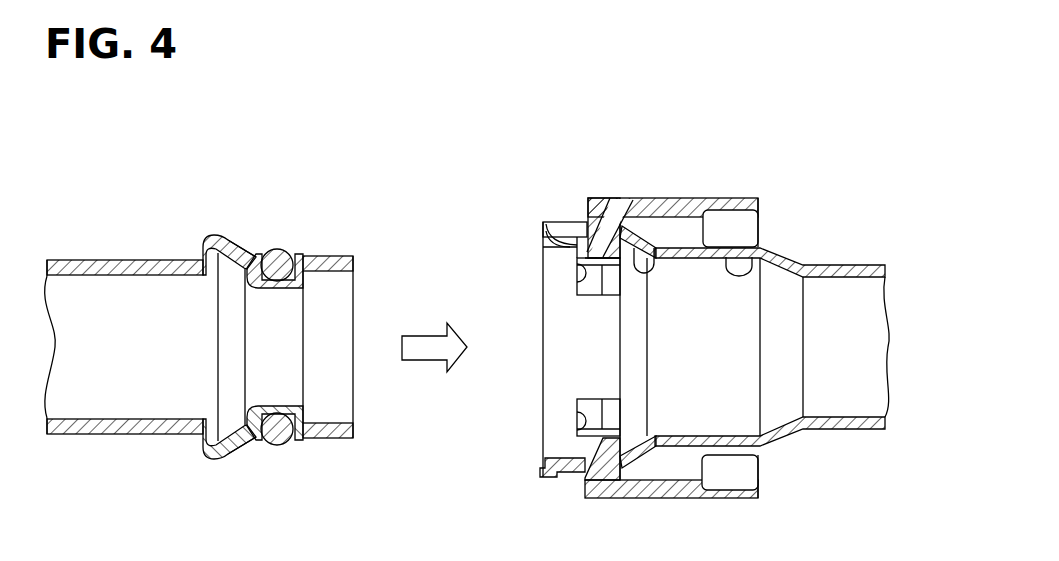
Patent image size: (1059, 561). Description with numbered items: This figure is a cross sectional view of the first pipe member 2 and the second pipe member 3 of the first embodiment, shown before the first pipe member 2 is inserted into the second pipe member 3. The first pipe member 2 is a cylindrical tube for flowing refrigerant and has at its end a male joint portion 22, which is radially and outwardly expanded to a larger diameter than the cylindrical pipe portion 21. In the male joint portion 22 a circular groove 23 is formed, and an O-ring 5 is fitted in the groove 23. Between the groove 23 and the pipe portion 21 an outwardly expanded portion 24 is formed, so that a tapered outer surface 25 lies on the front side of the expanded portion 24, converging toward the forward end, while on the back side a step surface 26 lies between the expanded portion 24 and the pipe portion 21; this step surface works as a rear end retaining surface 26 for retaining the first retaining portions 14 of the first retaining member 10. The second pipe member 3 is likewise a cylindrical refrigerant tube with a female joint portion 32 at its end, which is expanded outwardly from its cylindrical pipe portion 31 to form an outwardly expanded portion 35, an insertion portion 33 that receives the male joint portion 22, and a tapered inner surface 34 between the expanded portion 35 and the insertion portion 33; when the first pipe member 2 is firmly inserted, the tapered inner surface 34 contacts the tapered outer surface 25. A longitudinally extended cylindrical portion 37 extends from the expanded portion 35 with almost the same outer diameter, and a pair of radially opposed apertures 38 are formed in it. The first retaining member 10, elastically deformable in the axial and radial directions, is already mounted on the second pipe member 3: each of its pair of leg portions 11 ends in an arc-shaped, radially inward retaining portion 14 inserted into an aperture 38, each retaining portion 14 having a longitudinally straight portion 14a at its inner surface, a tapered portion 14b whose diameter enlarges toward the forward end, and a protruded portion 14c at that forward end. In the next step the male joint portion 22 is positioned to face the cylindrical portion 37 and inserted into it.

The first pipe member 2 is at (100, 250).
The cylindrical pipe portion 21 is at (137, 258).
The male joint portion 22 is at (326, 252).
The circular groove 23 is at (320, 440).
The outwardly expanded portion 24 is at (210, 456).
The tapered outer surface 25 is at (245, 450).
The step surface (rear end retaining surface) 26 is at (203, 443).
The O-ring 5 is at (283, 447).
The first retaining member 10 is at (690, 189).
The leg portions 11 is at (628, 222).
The first retaining portions 14 is at (599, 220).
The longitudinally straight portion 14a is at (605, 278).
The tapered portion 14b is at (548, 247).
The protruded portion 14c is at (545, 228).
The longitudinally extended cylindrical portion 37 is at (557, 222).
The apertures 38 is at (577, 270).
The second pipe member 3 is at (829, 254).
The cylindrical pipe portion 31 is at (868, 262).
The female joint portion 32 is at (729, 232).
The insertion portion 33 is at (760, 228).
The tapered inner surface 34 is at (673, 243).
The outwardly expanded portion 35 is at (640, 228).